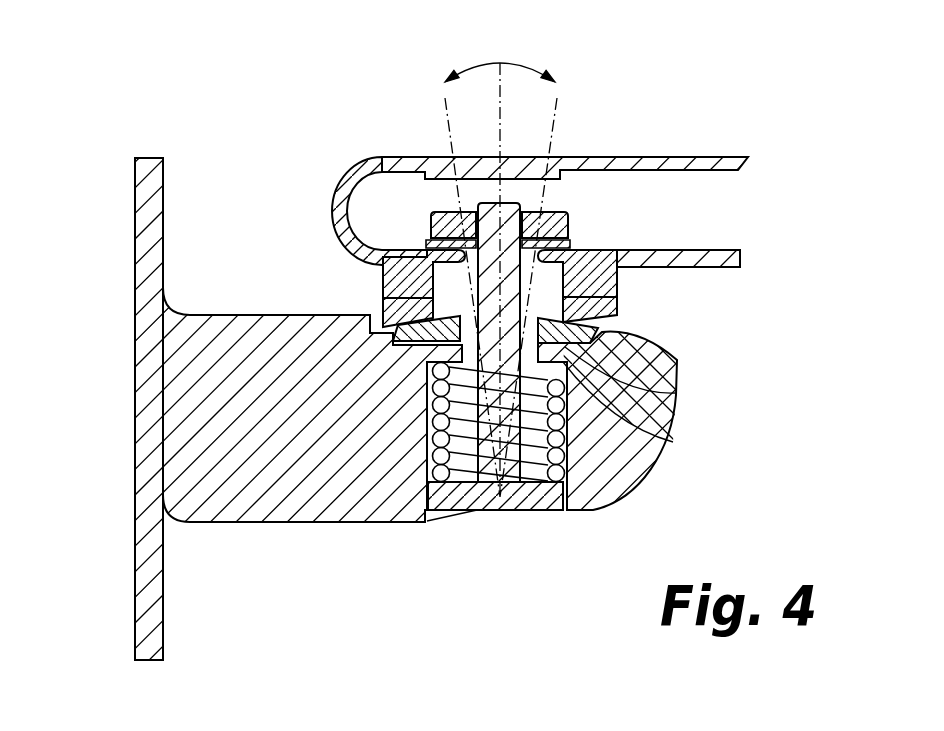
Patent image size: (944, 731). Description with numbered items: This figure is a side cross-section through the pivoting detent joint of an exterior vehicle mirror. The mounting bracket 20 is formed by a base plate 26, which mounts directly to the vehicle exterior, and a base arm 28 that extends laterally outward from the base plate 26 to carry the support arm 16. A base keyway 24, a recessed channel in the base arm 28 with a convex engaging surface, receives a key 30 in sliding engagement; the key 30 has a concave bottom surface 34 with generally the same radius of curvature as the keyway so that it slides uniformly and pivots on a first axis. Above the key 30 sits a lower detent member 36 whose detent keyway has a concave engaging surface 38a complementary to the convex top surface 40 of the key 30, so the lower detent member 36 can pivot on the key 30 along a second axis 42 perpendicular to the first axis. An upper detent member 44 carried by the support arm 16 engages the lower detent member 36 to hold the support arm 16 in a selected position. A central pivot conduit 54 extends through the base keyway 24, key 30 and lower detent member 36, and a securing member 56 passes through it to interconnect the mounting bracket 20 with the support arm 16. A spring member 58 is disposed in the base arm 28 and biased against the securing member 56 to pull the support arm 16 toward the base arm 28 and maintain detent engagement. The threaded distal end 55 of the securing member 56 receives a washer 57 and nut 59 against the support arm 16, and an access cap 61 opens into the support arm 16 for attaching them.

The support arm 16 is at (547, 184).
The mounting bracket 20 is at (472, 383).
The base keyway 24 is at (655, 421).
The base plate 26 is at (152, 173).
The base arm 28 is at (213, 335).
The key 30 is at (675, 393).
The concave bottom surface 34 is at (673, 442).
The lower detent member 36 is at (383, 308).
The concave engaging surface 38a is at (617, 317).
The convex top surface 40 is at (385, 287).
The second axis 42 is at (505, 63).
The upper detent member 44 is at (620, 270).
The central pivot conduit 54 is at (548, 277).
The distal end 55 is at (483, 203).
The securing member 56 is at (485, 483).
The washer 57 is at (427, 243).
The spring member 58 is at (556, 476).
The nut 59 is at (432, 217).
The access cap 61 is at (560, 172).